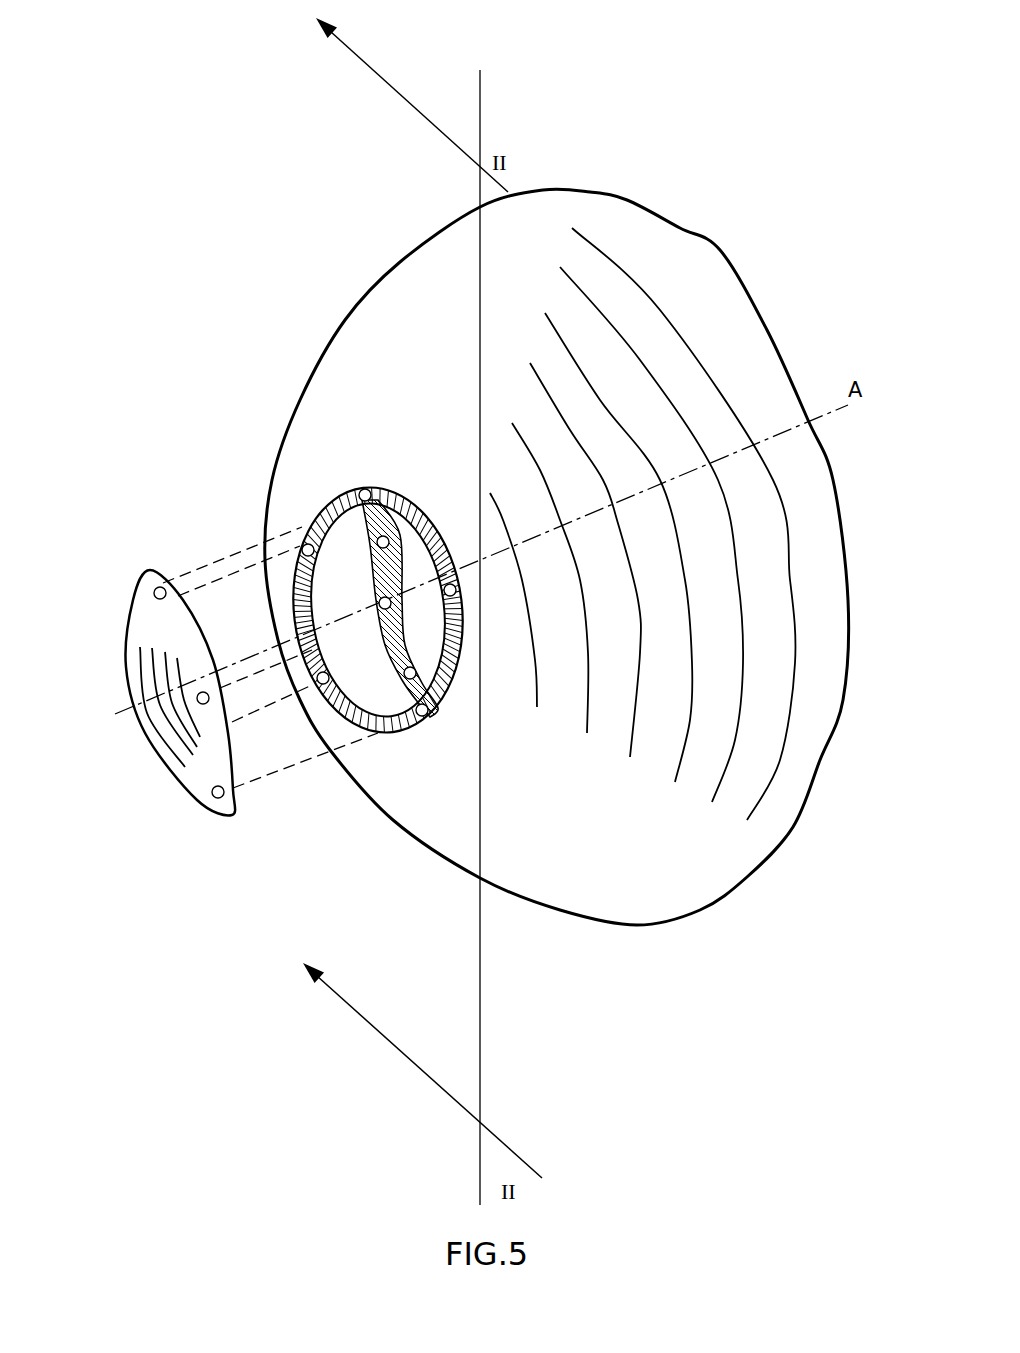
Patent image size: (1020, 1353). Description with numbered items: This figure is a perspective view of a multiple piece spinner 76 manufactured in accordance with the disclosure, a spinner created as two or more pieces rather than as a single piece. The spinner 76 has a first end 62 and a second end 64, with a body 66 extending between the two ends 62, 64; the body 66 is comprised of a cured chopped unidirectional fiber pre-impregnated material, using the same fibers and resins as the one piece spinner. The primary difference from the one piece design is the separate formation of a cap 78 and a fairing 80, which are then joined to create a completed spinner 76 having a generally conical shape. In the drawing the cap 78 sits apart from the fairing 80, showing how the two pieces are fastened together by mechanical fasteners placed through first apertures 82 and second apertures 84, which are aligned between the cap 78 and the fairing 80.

The first end 62 is at (182, 799).
The second end 64 is at (770, 325).
The body 66 is at (700, 860).
The multiple piece spinner 76 is at (291, 279).
The cap 78 is at (120, 626).
The fairing 80 is at (600, 186).
The first apertures 82 is at (160, 589).
The second apertures 84 is at (365, 491).